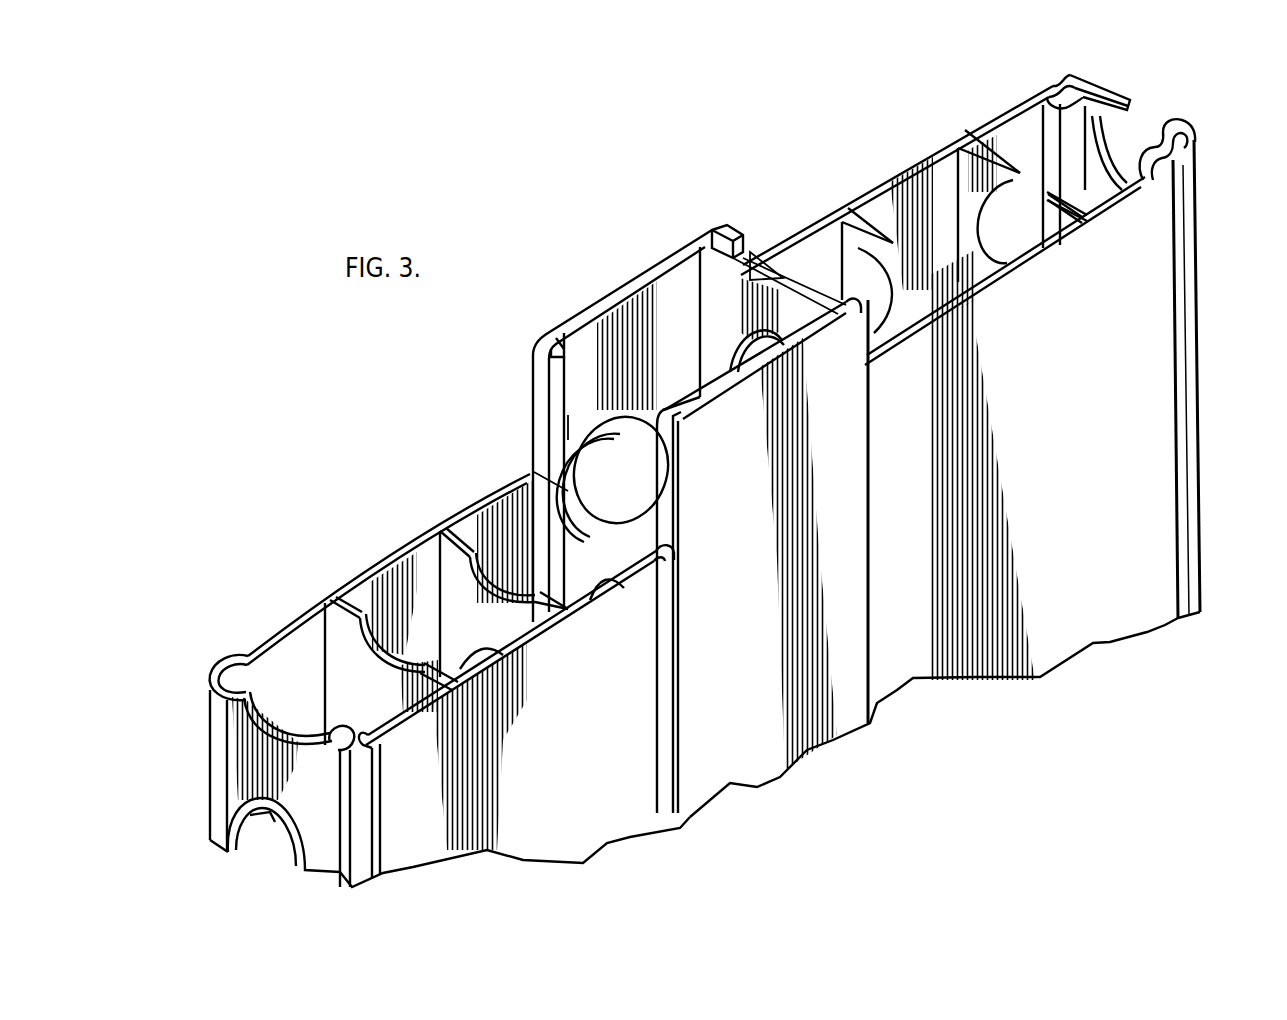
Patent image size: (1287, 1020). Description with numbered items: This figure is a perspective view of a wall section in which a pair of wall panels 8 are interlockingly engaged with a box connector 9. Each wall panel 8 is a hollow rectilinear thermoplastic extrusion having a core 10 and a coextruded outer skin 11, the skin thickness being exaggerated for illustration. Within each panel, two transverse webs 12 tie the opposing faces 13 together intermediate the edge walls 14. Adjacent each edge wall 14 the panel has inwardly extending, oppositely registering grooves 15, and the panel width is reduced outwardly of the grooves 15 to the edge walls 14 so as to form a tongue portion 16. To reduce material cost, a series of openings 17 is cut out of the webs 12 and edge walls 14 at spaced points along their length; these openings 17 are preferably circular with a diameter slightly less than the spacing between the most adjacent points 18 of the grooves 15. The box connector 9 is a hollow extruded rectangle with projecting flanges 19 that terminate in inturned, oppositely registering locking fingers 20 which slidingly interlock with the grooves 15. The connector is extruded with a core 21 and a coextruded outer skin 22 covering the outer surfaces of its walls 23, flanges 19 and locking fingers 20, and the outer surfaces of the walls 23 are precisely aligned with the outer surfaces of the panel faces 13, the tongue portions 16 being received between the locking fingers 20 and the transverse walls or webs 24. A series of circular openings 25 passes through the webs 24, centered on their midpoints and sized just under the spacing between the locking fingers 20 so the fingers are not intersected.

The wall panel 8 is at (388, 551).
The box connector 9 is at (597, 292).
The core 10 is at (300, 628).
The coextruded outer skin 11 is at (447, 523).
The transverse web 12 is at (347, 640).
The face 13 is at (556, 782).
The edge wall 14 is at (230, 773).
The groove 15 is at (237, 660).
The tongue portion 16 is at (207, 677).
The opening 17 is at (493, 660).
The most adjacent point 18 is at (325, 738).
The projecting flange 19 is at (535, 338).
The locking finger 20 is at (532, 392).
The core 21 is at (657, 262).
The coextruded outer skin 22 is at (560, 333).
The wall 23 is at (640, 303).
The transverse wall or web 24 is at (617, 394).
The opening 25 is at (640, 466).